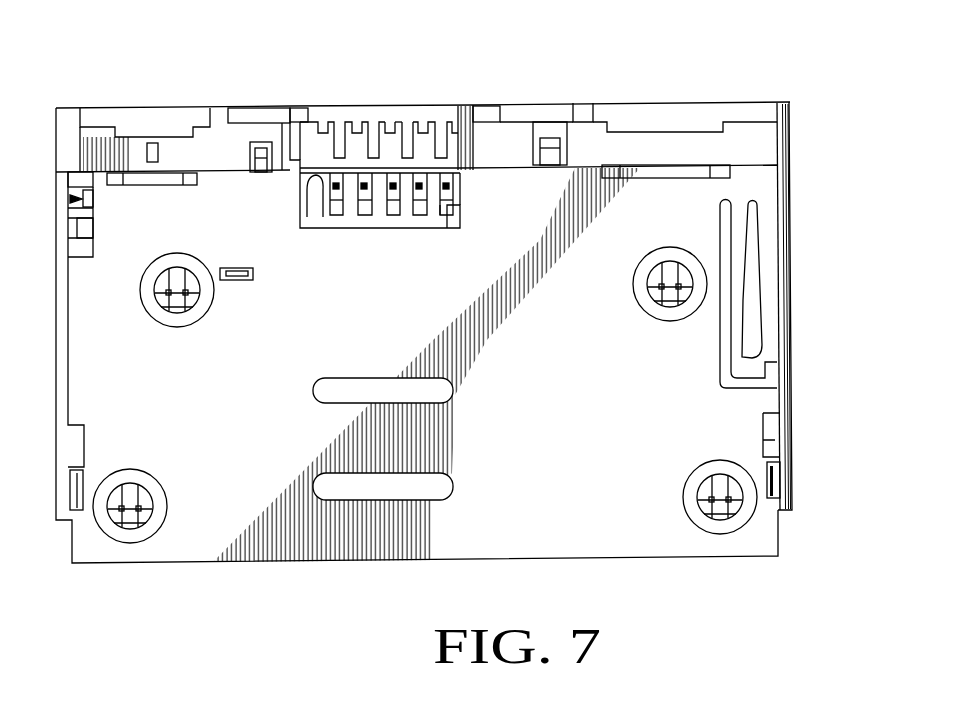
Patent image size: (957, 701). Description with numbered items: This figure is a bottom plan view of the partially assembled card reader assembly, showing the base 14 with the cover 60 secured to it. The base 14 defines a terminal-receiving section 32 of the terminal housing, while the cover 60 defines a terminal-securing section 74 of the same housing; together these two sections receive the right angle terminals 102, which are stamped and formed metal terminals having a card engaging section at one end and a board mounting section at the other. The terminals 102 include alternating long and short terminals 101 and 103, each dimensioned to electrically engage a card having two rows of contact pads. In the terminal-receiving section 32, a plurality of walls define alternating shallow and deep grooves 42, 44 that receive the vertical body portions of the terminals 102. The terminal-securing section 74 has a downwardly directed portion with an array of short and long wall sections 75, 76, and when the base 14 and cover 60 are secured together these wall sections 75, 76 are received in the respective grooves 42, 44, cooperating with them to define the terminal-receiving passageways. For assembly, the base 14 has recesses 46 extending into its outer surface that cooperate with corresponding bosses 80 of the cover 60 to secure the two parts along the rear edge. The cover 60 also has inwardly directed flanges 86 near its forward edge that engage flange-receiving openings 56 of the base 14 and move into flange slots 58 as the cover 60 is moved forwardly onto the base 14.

The base 14 is at (694, 570).
The terminal-receiving section 32 is at (293, 221).
The shallow groove 42 is at (312, 215).
The deep groove 44 is at (447, 173).
The recess 46 is at (157, 178).
The flange-receiving opening 56 is at (770, 443).
The flange slot 58 is at (773, 477).
The cover 60 is at (621, 90).
The terminal-securing section 74 is at (447, 95).
The short wall section 75 is at (392, 108).
The long wall section 76 is at (405, 108).
The boss 80 is at (142, 108).
The inwardly directed flange 86 is at (770, 425).
The long terminal 101 is at (438, 220).
The right angle terminal 102 is at (358, 199).
The short terminal 103 is at (389, 196).